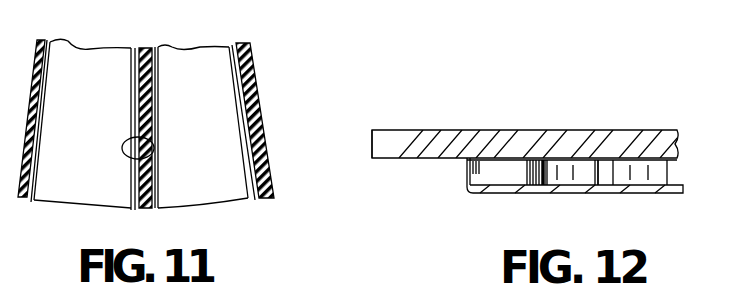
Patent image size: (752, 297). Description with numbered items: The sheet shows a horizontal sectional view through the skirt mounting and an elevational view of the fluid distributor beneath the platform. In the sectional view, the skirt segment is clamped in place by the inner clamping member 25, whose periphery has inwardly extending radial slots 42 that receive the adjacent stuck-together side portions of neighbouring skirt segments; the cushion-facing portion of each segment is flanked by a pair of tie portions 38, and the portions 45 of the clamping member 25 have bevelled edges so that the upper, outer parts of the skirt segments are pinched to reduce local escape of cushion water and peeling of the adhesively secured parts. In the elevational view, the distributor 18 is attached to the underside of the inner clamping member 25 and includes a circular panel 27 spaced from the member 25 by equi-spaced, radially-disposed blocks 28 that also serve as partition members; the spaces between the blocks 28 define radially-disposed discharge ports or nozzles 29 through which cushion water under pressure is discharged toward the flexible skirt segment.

In FIG. 12, the distributor 18 is at (534, 200).
In FIG. 11, the inner clamping member 25 is at (214, 166).
In FIG. 12, the inner clamping member 25 is at (503, 135).
In FIG. 12, the circular panel 27 is at (500, 194).
In FIG. 12, the radially-disposed blocks 28 is at (596, 180).
In FIG. 12, the discharge ports or nozzles 29 is at (463, 170).
In FIG. 11, the tie portions 38 is at (134, 48).
In FIG. 11, the radial slots 42 is at (156, 137).
In FIG. 11, the portions of the clamping member 45 is at (88, 190).
In FIG. 12, the portions of the clamping member 45 is at (380, 142).